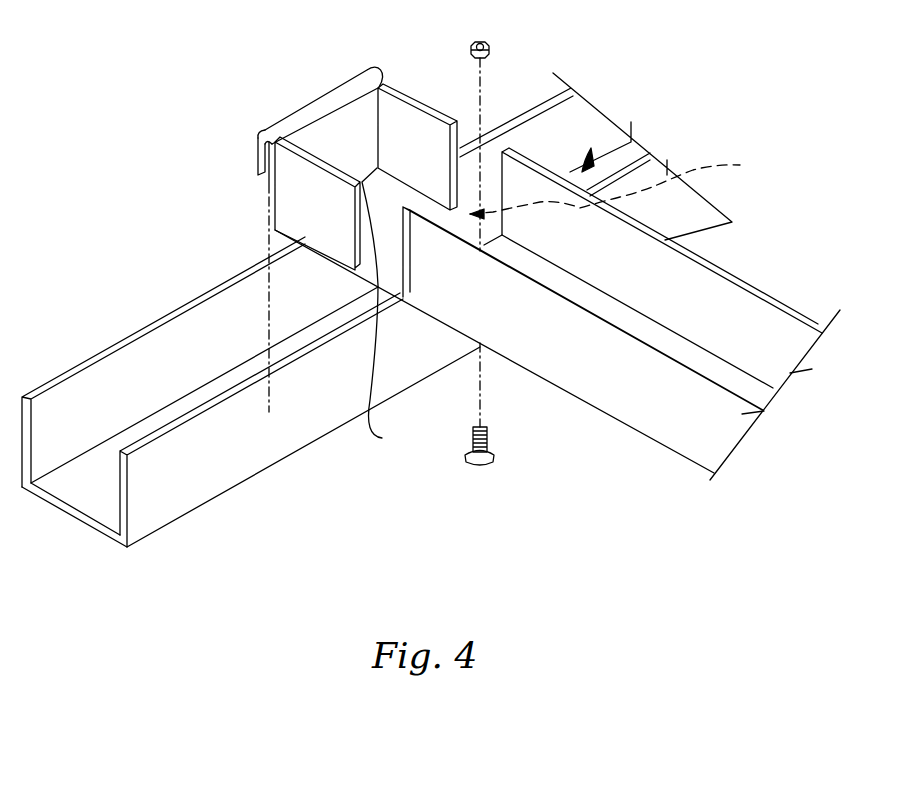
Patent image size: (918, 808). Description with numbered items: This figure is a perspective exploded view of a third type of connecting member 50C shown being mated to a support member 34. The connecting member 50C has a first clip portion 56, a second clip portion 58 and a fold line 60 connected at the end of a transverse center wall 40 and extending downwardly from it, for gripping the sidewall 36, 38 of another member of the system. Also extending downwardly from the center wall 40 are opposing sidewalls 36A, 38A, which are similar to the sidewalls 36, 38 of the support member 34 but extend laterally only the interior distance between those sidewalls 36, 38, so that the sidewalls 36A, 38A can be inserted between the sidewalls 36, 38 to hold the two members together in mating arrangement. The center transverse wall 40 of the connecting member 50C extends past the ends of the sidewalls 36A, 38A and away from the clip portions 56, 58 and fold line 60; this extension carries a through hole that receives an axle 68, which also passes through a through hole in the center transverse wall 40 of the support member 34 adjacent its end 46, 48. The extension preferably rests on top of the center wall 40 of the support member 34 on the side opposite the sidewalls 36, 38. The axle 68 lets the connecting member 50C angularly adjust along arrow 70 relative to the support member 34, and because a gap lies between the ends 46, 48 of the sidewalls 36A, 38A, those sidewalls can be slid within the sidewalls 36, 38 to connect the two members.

The support member 34 is at (752, 278).
The sidewall 36 is at (265, 448).
The sidewall 38 is at (140, 402).
The center transverse wall 40 is at (87, 505).
The sidewall 36A is at (332, 216).
The sidewall 38A is at (413, 80).
The end 46 is at (384, 309).
The end 48 is at (262, 127).
The third type of connecting member 50C is at (337, 215).
The first clip portion 56 is at (268, 198).
The second clip portion 58 is at (258, 152).
The fold line 60 is at (313, 99).
The axle 68 is at (488, 433).
The arrow 70 is at (742, 166).